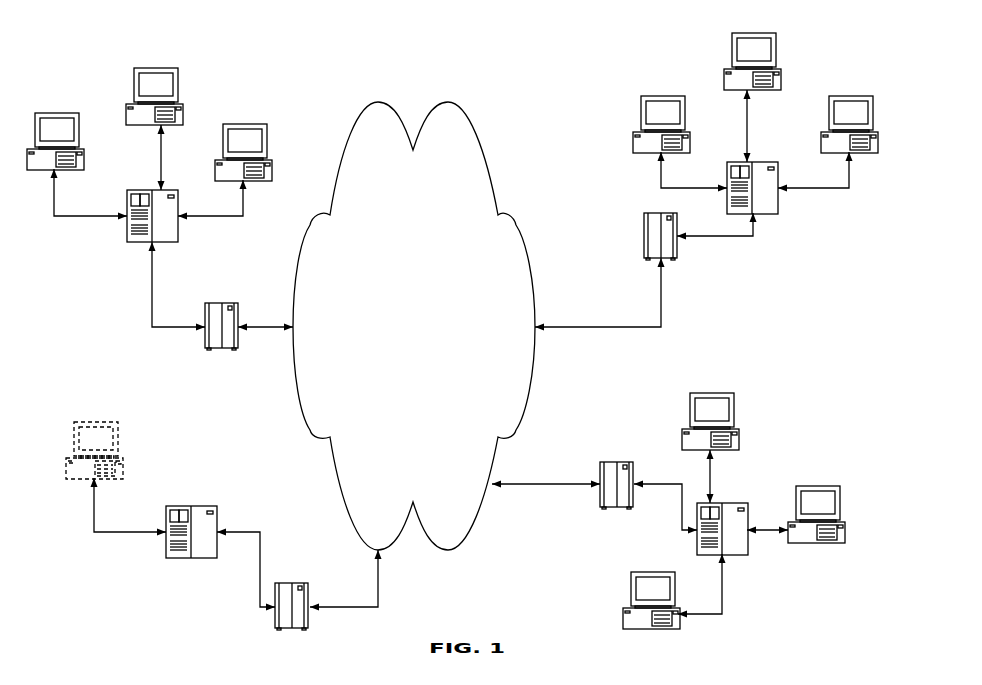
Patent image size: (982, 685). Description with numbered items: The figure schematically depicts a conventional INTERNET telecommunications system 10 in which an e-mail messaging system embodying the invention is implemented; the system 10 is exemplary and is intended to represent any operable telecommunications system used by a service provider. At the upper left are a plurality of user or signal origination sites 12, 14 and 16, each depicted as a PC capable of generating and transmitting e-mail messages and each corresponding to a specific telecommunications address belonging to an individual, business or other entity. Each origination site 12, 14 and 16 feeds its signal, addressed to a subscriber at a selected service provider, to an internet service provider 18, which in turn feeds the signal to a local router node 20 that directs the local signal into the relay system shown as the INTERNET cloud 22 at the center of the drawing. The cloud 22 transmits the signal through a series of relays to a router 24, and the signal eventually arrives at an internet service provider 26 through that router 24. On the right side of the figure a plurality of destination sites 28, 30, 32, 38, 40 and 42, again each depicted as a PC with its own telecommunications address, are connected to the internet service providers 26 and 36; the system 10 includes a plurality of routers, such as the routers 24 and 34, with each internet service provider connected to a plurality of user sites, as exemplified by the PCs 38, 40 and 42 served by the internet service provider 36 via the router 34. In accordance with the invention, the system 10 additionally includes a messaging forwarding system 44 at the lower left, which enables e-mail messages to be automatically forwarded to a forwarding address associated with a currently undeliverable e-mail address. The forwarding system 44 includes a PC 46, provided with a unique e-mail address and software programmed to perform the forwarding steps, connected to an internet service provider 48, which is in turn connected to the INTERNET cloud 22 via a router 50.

The telecommunications system 10 is at (465, 52).
The signal origination site 12 is at (76, 113).
The signal origination site 14 is at (135, 69).
The signal origination site 16 is at (262, 124).
The internet service provider 18 is at (145, 240).
The local router node 20 is at (238, 303).
The INTERNET cloud 22 is at (496, 172).
The router 24 is at (653, 222).
The internet service provider 26 is at (760, 202).
The destination site 28 is at (685, 107).
The destination site 30 is at (760, 33).
The destination site 32 is at (862, 96).
The router 34 is at (630, 478).
The internet service provider 36 is at (733, 540).
The destination site 38 is at (693, 395).
The destination site 40 is at (798, 485).
The destination site 42 is at (632, 575).
The messaging forwarding system 44 is at (95, 418).
The PC 46 is at (122, 470).
The internet service provider 48 is at (205, 522).
The router 50 is at (287, 590).